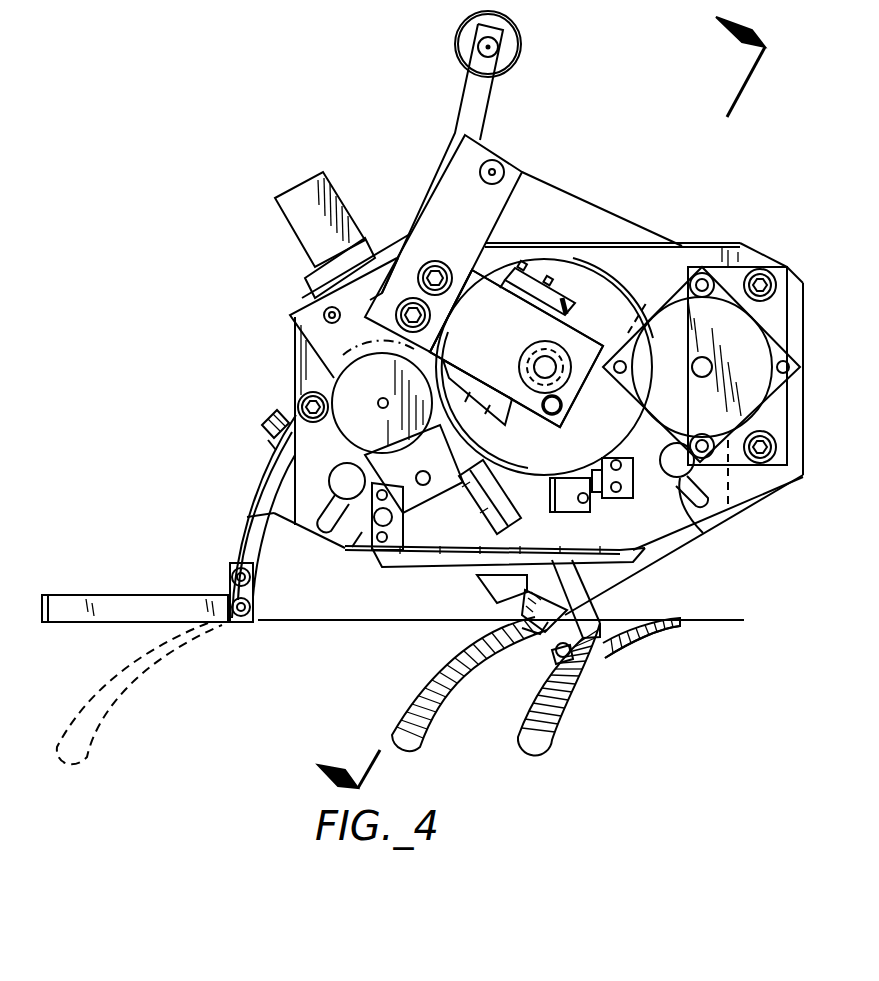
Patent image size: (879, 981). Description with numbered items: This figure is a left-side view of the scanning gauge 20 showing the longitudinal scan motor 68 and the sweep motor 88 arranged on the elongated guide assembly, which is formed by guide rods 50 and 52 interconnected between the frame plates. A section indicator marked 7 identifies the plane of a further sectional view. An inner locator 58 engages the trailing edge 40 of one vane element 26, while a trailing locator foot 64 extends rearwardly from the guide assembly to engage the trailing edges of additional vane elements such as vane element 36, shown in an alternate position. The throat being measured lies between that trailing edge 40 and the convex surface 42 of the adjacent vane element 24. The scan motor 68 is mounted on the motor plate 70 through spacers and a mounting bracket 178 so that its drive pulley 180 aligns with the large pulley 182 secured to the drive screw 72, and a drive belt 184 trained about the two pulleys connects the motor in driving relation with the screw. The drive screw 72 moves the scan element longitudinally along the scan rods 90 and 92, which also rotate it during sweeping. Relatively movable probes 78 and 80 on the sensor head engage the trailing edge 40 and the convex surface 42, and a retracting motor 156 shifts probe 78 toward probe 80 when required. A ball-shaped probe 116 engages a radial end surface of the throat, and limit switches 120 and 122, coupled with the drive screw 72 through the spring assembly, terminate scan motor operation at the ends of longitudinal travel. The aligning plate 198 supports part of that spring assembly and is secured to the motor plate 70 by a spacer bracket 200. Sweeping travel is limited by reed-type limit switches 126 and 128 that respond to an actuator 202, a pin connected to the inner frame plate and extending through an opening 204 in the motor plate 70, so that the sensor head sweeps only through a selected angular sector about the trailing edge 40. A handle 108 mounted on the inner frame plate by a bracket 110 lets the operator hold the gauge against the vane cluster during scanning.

The section line 7- 7 is at (533, 397).
The scanning gauge 20 is at (672, 150).
The vane element 24 is at (570, 690).
The vane element 26 is at (425, 680).
The additional vane element 36 is at (155, 659).
The trailing edge 40 is at (522, 608).
The convex surface 42 is at (645, 625).
The guide rod 50 is at (703, 533).
The guide rod 52 is at (346, 470).
The inner locator 58 is at (480, 577).
The trailing locator foot 64 is at (213, 595).
The scan motor 68 is at (667, 419).
The motor plate 70 is at (718, 246).
The drive screw 72 is at (540, 367).
The probe 78 is at (530, 636).
The probe 80 is at (551, 656).
The sweep motor 88 is at (337, 414).
The scan rod 90 is at (632, 486).
The scan rod 92 is at (352, 548).
The handle 108 is at (520, 50).
The bracket 110 is at (486, 83).
The ball-shaped probe 116 is at (590, 652).
The limit switch 120 is at (432, 362).
The limit switch 122 is at (570, 302).
The limit switch 126 is at (462, 524).
The limit switch 128 is at (578, 517).
The retracting motor 156 is at (340, 202).
The mounting bracket 178 is at (792, 268).
The drive pulley 180 is at (670, 272).
The large pulley 182 is at (617, 420).
The drive belt 184 is at (646, 298).
The aligning plate 198 is at (488, 315).
The spacer bracket 200 is at (475, 234).
The actuator 202 is at (530, 468).
The opening 204 is at (530, 505).